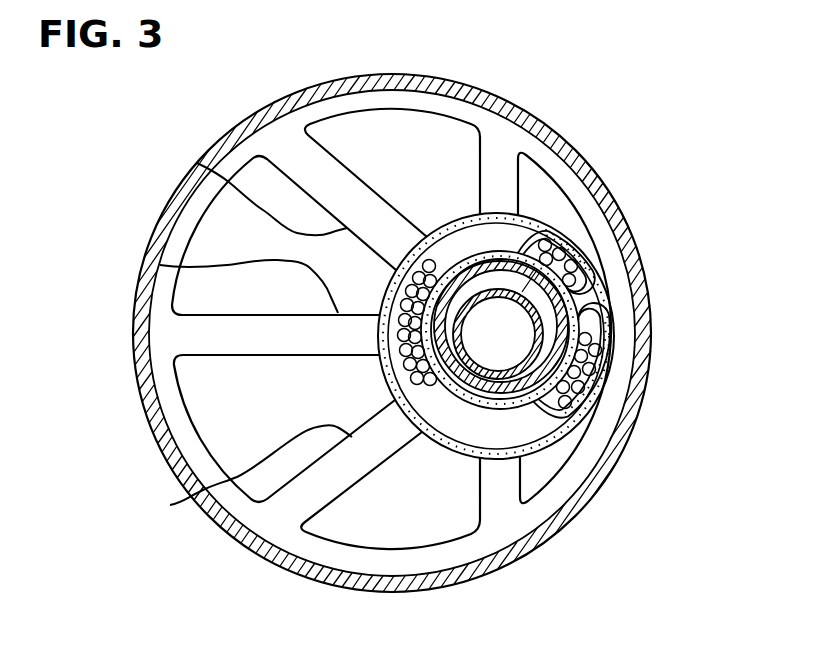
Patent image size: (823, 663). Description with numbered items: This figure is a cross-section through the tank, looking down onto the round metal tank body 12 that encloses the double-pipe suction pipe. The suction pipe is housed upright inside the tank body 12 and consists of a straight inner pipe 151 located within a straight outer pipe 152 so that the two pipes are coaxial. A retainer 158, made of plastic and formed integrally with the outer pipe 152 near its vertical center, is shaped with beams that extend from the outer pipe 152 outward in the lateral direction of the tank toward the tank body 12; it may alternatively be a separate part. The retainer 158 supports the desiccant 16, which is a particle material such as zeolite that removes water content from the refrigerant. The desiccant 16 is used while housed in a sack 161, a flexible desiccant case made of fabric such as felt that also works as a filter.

The tank body 12 is at (563, 150).
The retainer 158 is at (197, 163).
The inner pipe 151 is at (583, 256).
The outer pipe 152 is at (600, 322).
The desiccant 16 is at (578, 389).
The sack 161 is at (562, 430).